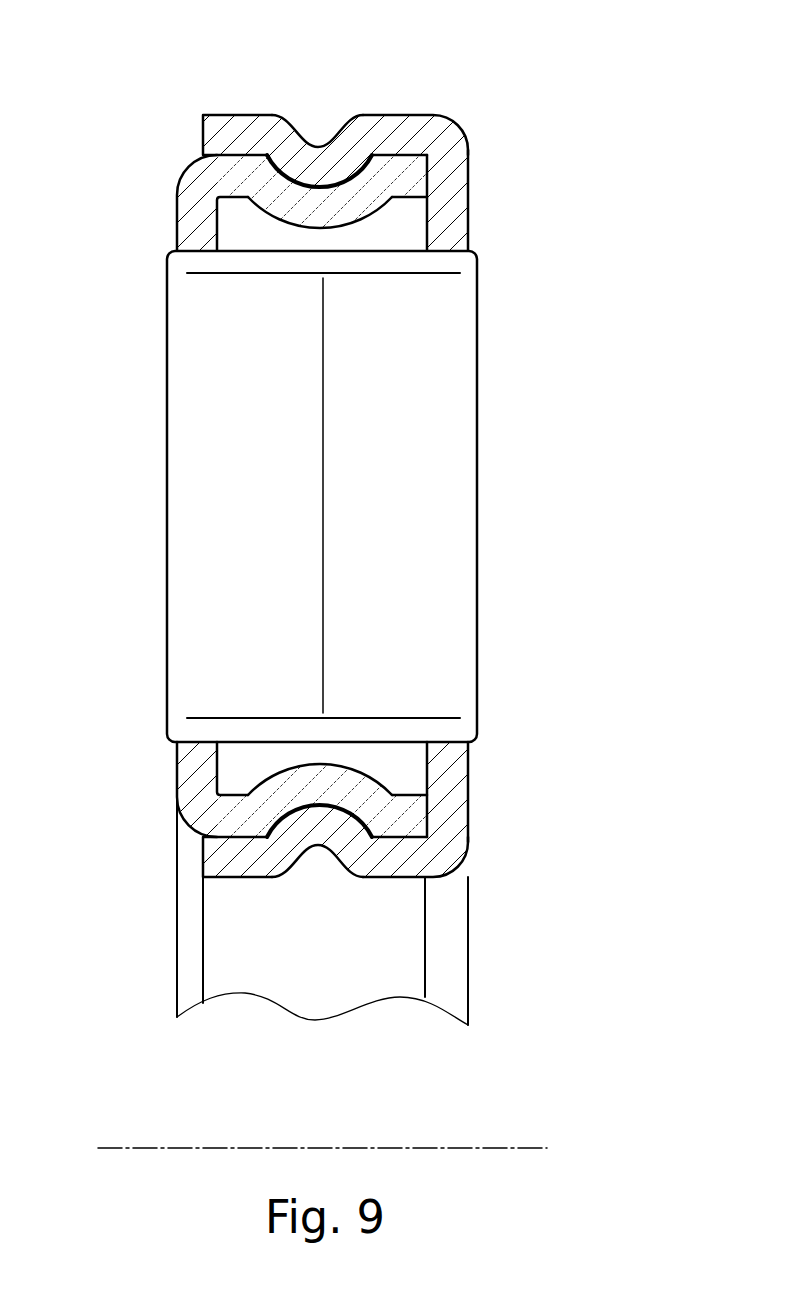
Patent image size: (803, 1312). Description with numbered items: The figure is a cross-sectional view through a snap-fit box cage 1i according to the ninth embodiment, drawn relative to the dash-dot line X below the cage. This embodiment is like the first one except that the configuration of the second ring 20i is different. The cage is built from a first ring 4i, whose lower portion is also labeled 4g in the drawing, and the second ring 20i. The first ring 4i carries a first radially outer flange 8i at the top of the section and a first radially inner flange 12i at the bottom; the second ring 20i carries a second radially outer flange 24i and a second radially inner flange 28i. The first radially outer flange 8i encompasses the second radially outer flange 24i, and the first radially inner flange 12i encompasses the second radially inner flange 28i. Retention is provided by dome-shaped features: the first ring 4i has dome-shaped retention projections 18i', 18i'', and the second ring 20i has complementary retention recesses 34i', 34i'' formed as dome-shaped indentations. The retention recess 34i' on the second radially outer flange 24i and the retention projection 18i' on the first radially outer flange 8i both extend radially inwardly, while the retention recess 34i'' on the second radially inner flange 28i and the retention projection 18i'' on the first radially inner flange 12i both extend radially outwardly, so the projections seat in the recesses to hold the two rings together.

The snap-fit box cage 1i is at (518, 150).
The first ring 4i is at (470, 223).
The outer ring 4g is at (472, 808).
The first radially outer flange 8i is at (237, 140).
The first radially inner flange 12i is at (237, 863).
The retention projection 18i' is at (321, 98).
The retention projection 18i'' is at (317, 890).
The second ring 20i is at (177, 778).
The second radially outer flange 24i is at (225, 182).
The second radially inner flange 28i is at (400, 815).
The retention recess 34i' is at (242, 235).
The retention recess 34i'' is at (416, 754).
The axis of rotation X is at (504, 1148).